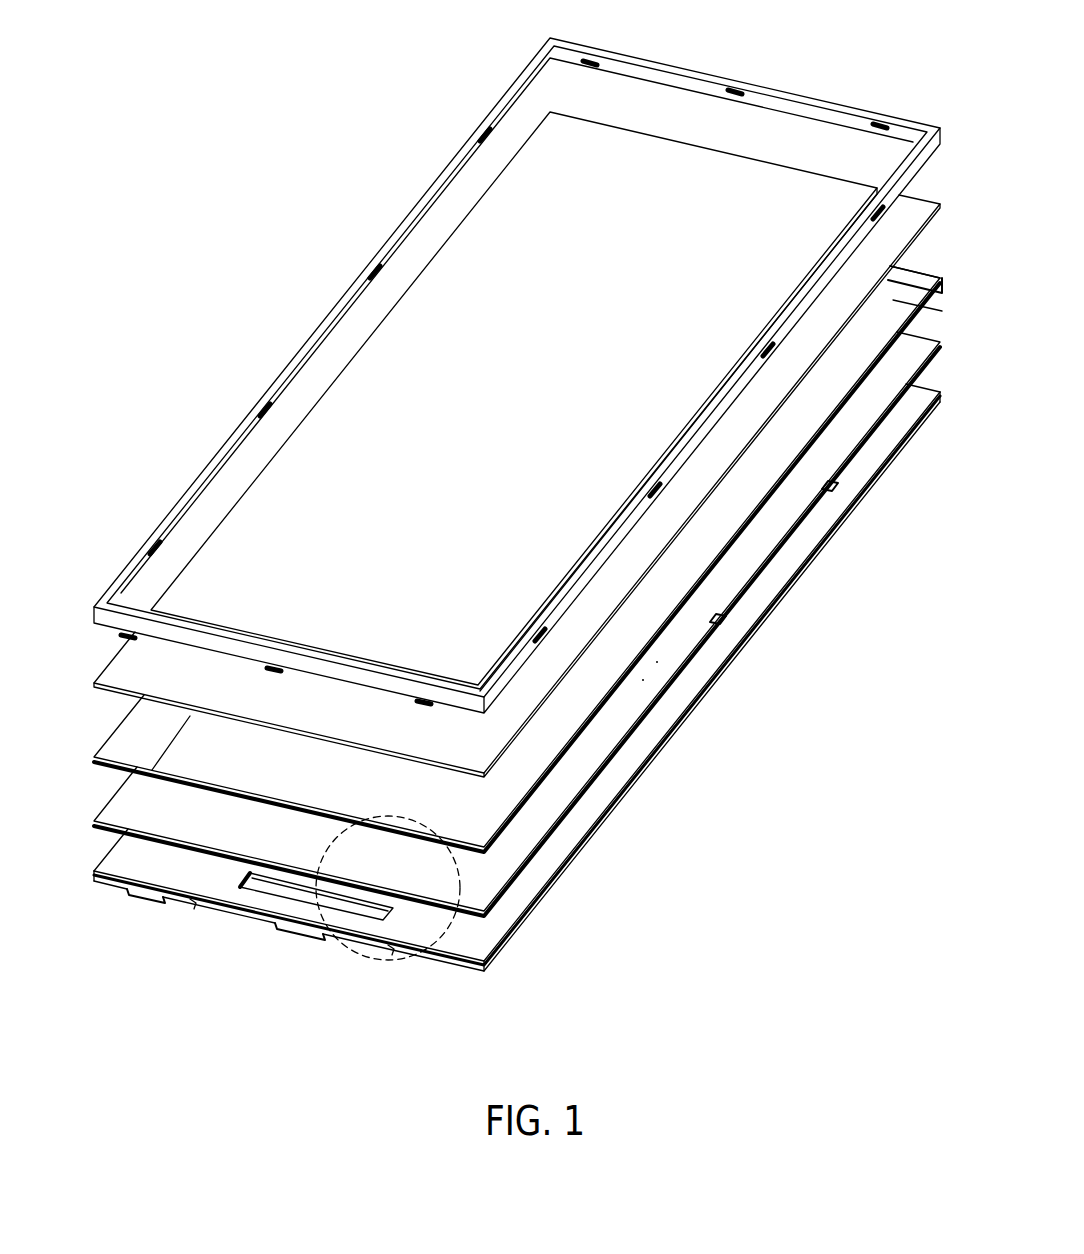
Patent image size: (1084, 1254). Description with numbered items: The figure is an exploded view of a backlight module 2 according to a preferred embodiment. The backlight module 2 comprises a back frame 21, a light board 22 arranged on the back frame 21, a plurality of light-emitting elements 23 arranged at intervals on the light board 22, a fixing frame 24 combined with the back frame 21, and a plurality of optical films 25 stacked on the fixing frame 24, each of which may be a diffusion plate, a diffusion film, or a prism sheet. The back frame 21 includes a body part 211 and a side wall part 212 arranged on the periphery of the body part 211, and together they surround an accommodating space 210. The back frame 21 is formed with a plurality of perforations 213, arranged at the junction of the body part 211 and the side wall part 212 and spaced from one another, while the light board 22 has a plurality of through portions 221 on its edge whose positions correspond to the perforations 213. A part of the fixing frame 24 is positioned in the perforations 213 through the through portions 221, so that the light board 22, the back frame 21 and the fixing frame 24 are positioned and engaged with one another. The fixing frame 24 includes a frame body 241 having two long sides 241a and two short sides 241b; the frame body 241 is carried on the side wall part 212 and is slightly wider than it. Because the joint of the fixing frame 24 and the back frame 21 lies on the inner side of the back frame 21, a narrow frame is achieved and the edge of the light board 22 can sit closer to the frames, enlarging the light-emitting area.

The backlight module 2 is at (338, 148).
The back frame 21 is at (517, 713).
The accommodating space 210 is at (483, 945).
The body part 211 is at (583, 818).
The side wall part 212 is at (575, 863).
The perforations 213 is at (197, 903).
The light board 22 is at (522, 624).
The through portions 221 is at (828, 482).
The light-emitting elements 23 is at (643, 680).
The fixing frame 24 is at (526, 523).
The frame body 241 is at (805, 252).
The long sides 241a is at (907, 308).
The short sides 241b is at (897, 253).
The optical films 25 is at (137, 690).